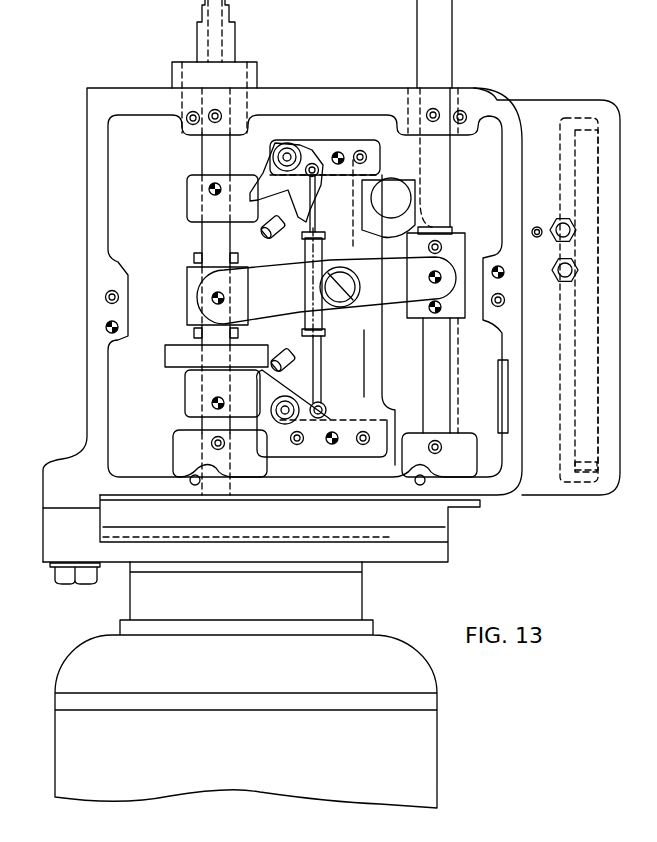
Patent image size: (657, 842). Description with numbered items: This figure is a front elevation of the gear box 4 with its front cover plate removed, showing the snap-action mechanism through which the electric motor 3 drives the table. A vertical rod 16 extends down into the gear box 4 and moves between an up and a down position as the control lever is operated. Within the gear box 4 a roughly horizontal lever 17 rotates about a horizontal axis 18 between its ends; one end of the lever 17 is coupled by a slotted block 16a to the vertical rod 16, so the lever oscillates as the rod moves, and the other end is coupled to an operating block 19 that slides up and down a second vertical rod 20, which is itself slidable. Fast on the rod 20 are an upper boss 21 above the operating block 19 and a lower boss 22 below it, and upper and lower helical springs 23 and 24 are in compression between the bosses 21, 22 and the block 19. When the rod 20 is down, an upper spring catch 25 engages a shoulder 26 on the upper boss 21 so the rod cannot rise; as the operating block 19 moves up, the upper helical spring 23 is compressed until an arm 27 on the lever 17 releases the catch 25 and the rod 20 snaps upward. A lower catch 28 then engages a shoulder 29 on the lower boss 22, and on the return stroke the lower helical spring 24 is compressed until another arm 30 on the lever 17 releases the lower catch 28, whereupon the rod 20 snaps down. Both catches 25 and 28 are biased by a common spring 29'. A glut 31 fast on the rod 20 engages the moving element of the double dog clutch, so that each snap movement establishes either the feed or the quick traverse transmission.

The electric motor 3 is at (420, 750).
The gear box 4 is at (95, 233).
The vertical rod 16 is at (445, 38).
The slotted block 16a is at (460, 308).
The lever 17 is at (388, 293).
The horizontal axis 18 is at (419, 375).
The operating block 19 is at (190, 280).
The second vertical rod 20 is at (210, 140).
The upper boss 21 is at (187, 188).
The lower boss 22 is at (193, 397).
The upper helical spring 23 is at (198, 242).
The lower helical spring 24 is at (197, 340).
The upper spring catch 25 is at (267, 185).
The shoulder 26 is at (283, 193).
The arm 27 is at (280, 222).
The lower catch 28 is at (270, 372).
The shoulder 29 is at (248, 352).
The common spring 29' is at (328, 279).
The arm 30 is at (290, 362).
The glut 31 is at (175, 358).